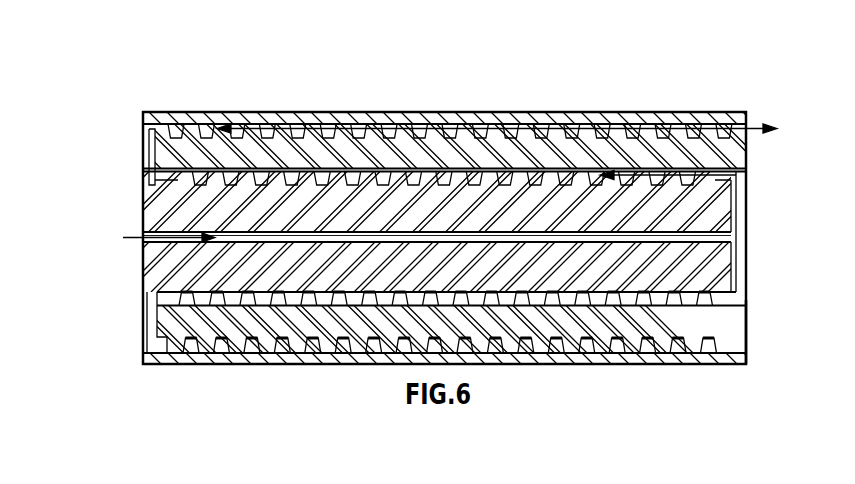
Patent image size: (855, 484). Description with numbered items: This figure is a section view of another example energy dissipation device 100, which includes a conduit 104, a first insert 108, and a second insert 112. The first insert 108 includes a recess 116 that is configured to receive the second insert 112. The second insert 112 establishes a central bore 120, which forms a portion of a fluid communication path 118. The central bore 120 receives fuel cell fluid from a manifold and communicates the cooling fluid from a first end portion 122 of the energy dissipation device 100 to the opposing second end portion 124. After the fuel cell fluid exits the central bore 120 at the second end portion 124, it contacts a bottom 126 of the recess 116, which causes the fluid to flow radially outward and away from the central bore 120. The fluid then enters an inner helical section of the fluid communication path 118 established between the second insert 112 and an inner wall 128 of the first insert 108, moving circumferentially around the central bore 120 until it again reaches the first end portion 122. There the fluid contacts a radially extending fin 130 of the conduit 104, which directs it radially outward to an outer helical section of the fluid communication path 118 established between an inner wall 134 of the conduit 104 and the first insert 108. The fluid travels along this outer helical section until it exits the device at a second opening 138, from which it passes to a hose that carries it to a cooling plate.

The energy dissipation device 100 is at (638, 88).
The conduit 104 is at (704, 112).
The first insert 108 is at (728, 158).
The second insert 112 is at (713, 212).
The recess 116 is at (727, 296).
The fluid communication path 118 is at (130, 238).
The central bore 120 is at (705, 240).
The first end portion 122 is at (141, 370).
The second end portion 124 is at (757, 371).
The bottom of the recess 126 is at (746, 244).
The inner wall of the first insert 128 is at (747, 173).
The radially extending fin 130 is at (143, 156).
The inner wall of the conduit 134 is at (284, 127).
The second opening 138 is at (747, 127).